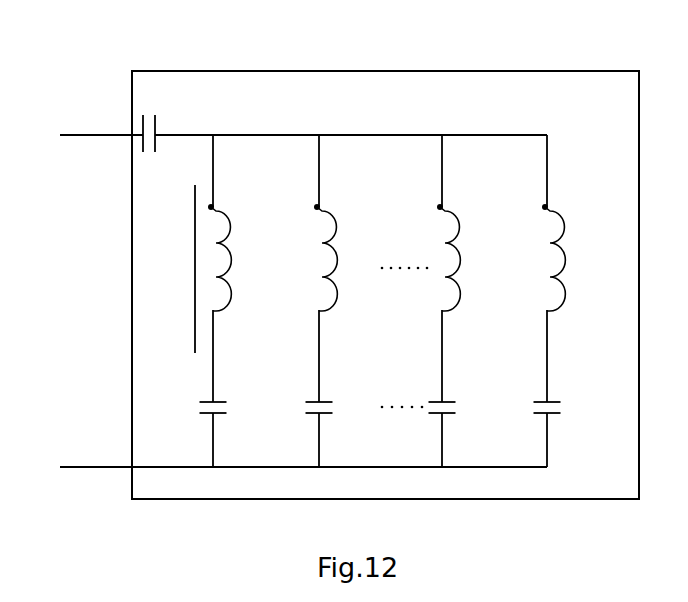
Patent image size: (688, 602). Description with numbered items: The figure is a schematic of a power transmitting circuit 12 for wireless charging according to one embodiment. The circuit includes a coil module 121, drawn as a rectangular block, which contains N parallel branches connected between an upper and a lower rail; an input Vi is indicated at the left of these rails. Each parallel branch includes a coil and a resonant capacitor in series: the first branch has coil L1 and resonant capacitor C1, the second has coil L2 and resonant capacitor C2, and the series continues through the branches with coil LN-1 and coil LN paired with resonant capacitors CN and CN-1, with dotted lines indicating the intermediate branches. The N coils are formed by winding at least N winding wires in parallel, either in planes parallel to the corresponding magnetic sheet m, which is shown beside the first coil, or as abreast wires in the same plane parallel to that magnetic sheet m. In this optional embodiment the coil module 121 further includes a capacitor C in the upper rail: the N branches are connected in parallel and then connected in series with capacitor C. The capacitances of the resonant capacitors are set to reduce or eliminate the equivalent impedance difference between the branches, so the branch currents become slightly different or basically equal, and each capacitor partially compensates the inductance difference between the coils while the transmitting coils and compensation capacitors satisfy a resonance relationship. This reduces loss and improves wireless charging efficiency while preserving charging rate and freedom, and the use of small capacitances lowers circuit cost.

The power transmitting circuit 12 is at (118, 102).
The coil module 121 is at (450, 71).
The capacitor C is at (150, 118).
The magnetic sheet m is at (181, 269).
The input voltage Vi is at (89, 301).
The coil L1 is at (236, 257).
The coil L2 is at (339, 257).
The coil LN-1 is at (475, 257).
The coil LN is at (569, 257).
The resonant capacitor C1 is at (231, 411).
The resonant capacitor C2 is at (335, 411).
The resonant capacitor CN is at (459, 411).
The resonant capacitor CN-1 is at (576, 411).